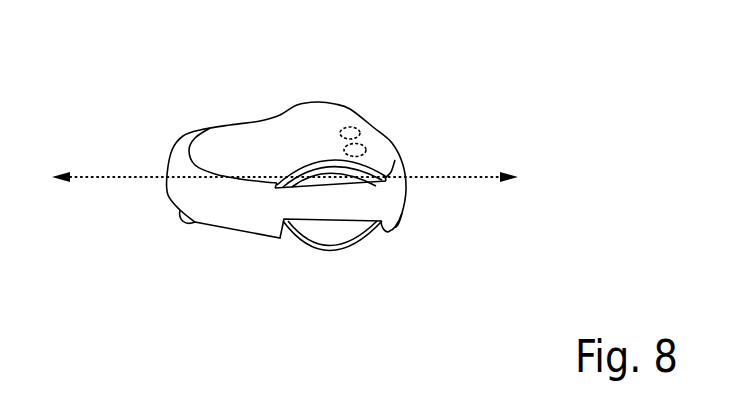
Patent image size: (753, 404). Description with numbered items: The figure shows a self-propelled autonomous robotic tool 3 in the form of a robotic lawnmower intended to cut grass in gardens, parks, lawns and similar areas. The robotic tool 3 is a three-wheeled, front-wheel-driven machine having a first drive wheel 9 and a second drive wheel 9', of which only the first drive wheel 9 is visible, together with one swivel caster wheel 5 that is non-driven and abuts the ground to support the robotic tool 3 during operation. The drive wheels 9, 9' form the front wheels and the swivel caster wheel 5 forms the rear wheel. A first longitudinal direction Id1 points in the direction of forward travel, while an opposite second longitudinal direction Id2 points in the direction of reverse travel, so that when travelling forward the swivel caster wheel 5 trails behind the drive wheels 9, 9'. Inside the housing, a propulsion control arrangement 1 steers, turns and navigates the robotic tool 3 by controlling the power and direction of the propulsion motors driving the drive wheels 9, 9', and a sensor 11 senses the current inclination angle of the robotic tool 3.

The self-propelled autonomous robotic tool 3 is at (226, 70).
The propulsion control arrangement 1 is at (348, 126).
The sensor 11 is at (359, 146).
The swivel caster wheel 5 is at (182, 225).
The first drive wheel 9 is at (330, 244).
The second drive wheel 9' is at (431, 252).
The first longitudinal direction Id1 is at (463, 177).
The second longitudinal direction Id2 is at (110, 174).